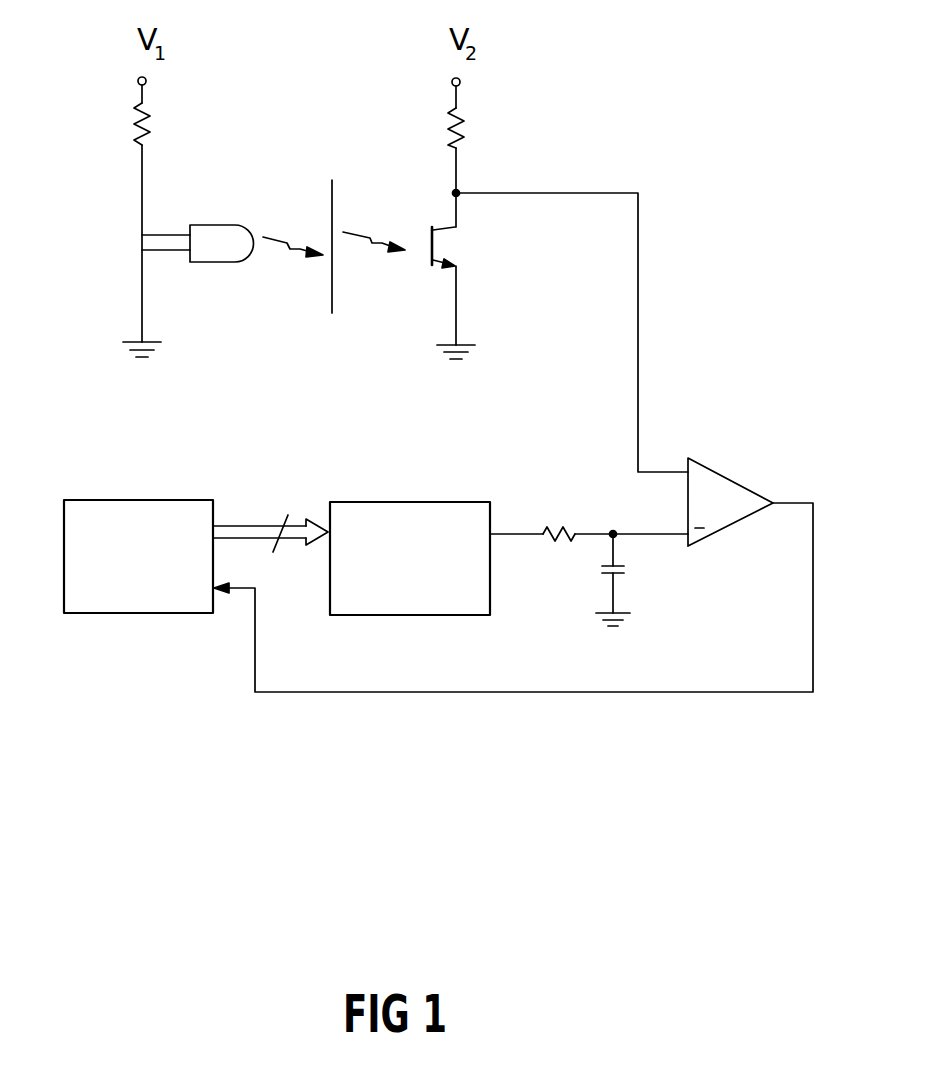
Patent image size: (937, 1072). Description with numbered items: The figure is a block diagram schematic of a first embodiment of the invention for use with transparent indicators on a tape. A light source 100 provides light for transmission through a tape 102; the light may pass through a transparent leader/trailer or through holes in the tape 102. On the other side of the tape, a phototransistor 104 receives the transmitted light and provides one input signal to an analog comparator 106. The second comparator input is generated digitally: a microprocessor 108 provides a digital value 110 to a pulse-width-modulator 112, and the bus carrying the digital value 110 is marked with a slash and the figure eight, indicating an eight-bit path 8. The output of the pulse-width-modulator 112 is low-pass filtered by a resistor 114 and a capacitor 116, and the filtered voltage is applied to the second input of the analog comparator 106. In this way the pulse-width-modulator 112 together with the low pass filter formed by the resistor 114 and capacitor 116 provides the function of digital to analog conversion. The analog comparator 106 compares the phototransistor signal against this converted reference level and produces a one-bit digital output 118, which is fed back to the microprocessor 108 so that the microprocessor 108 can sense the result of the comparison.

The light source 100 is at (208, 225).
The tape 102 is at (335, 207).
The phototransistor 104 is at (445, 232).
The analog comparator 106 is at (742, 513).
The microprocessor 108 is at (147, 603).
The digital value 110 is at (250, 525).
The pulse-width-modulator 112 is at (419, 605).
The resistor 114 is at (540, 528).
The capacitor 116 is at (628, 570).
The one-bit digital output 118 is at (785, 502).
The bus width indicator 8 is at (283, 516).